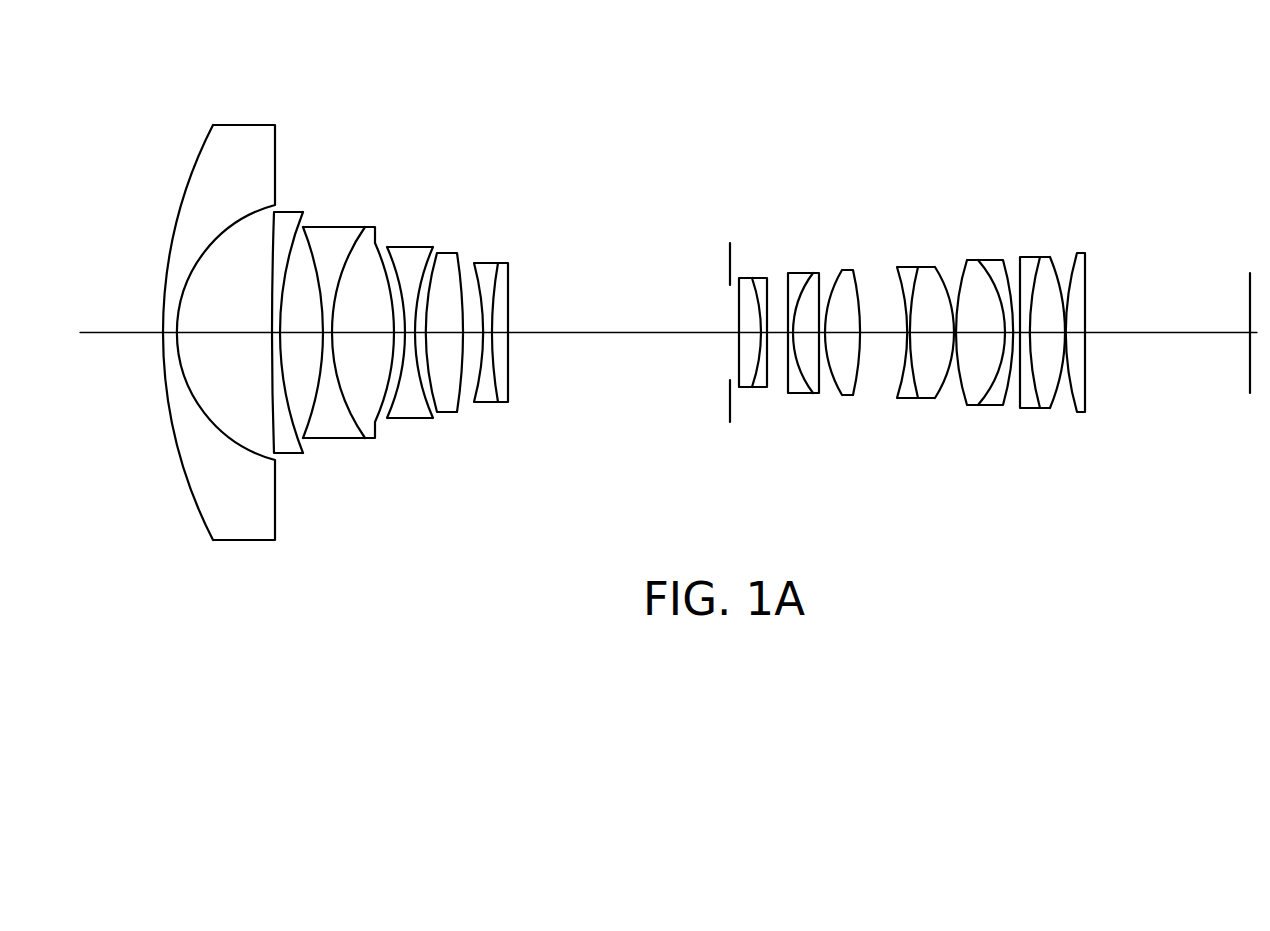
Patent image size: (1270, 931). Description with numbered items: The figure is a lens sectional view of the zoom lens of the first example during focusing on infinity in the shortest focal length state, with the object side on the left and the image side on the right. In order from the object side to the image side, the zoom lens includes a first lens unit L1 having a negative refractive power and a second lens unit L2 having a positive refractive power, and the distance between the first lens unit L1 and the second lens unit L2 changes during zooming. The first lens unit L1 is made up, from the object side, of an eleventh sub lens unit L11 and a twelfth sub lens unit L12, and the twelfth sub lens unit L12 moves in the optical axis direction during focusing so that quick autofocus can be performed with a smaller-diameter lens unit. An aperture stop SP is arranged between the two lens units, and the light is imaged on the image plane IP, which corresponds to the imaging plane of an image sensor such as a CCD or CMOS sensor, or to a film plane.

The first lens unit L1 is at (508, 63).
The eleventh sub lens unit L11 is at (463, 123).
The twelfth sub lens unit L12 is at (508, 123).
The second lens unit L2 is at (1085, 63).
The aperture stop SP is at (715, 252).
The image plane IP is at (1233, 282).